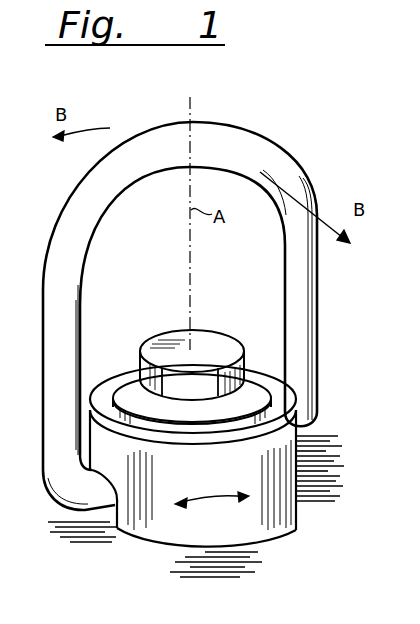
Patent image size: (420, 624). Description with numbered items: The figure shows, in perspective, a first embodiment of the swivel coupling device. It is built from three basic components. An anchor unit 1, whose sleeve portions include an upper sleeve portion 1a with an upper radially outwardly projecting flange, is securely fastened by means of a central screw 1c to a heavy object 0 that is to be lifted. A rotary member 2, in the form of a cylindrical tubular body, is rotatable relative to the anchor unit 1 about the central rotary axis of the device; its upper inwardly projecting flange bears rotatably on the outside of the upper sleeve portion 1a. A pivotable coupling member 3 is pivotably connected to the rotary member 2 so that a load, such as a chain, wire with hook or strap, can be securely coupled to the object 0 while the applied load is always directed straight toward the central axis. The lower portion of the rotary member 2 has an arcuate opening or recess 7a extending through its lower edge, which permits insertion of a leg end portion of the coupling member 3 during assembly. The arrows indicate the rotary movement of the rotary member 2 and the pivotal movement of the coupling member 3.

The anchor unit 1 is at (198, 353).
The upper sleeve portion 1a is at (258, 362).
The central screw 1c is at (177, 347).
The rotary member 2 is at (170, 530).
The pivotable coupling member 3 is at (297, 312).
The arcuate opening or recess 7a is at (98, 495).
The heavy object 0 is at (322, 456).